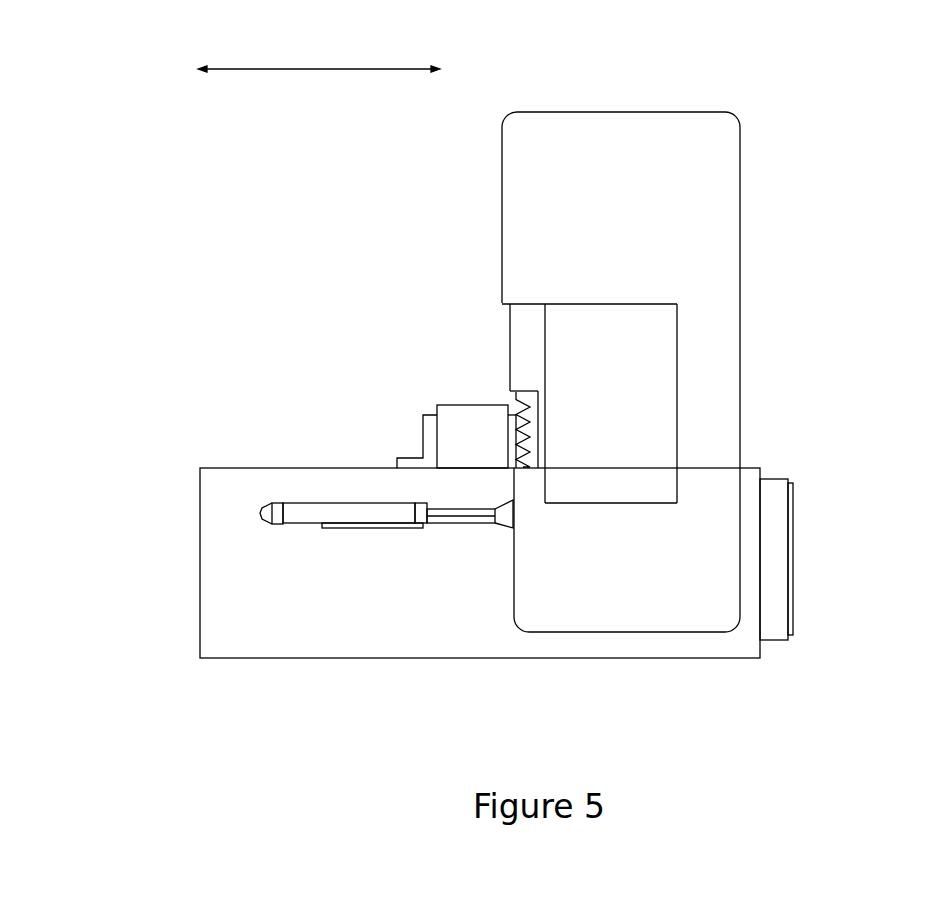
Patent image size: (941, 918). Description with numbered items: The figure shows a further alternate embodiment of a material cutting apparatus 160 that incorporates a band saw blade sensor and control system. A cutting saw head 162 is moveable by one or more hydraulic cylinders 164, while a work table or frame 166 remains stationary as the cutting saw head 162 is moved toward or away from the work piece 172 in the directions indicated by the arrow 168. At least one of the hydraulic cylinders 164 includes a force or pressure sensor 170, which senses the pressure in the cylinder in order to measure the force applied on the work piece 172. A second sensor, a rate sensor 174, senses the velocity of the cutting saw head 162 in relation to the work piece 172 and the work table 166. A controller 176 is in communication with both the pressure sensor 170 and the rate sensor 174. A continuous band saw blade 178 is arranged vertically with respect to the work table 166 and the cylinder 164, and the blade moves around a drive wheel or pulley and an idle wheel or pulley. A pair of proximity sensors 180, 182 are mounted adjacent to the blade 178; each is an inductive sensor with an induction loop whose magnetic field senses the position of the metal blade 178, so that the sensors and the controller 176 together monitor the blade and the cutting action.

The arrow 168 is at (312, 69).
The material cutting apparatus 160 is at (248, 267).
The cutting saw head 162 is at (727, 269).
The proximity sensor 180 is at (527, 379).
The continuous band saw blade 178 is at (549, 413).
The proximity sensor 182 is at (511, 456).
The work piece 172 is at (452, 421).
The force or pressure sensor 170 is at (268, 491).
The hydraulic cylinder 164 is at (265, 556).
The rate sensor 174 is at (492, 541).
The work table or frame 166 is at (272, 618).
The controller 176 is at (785, 469).